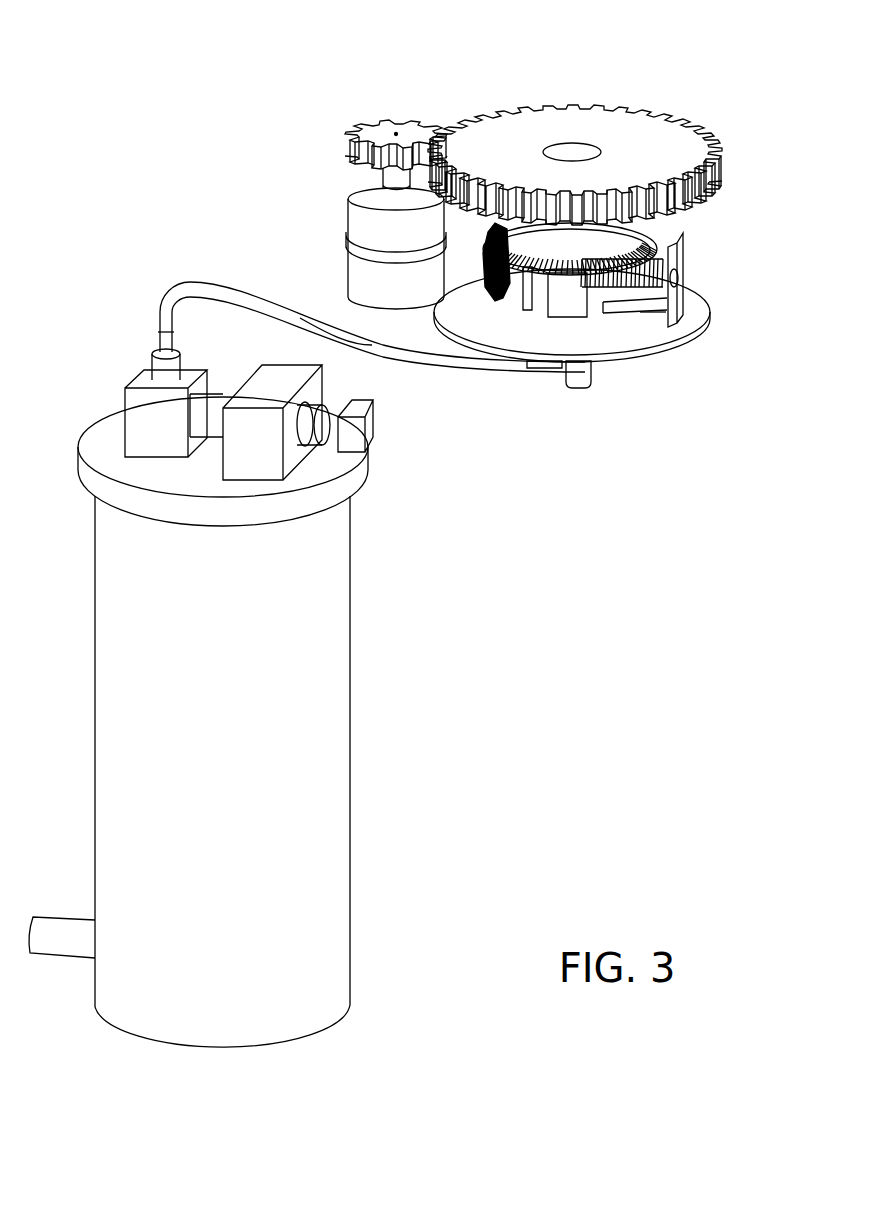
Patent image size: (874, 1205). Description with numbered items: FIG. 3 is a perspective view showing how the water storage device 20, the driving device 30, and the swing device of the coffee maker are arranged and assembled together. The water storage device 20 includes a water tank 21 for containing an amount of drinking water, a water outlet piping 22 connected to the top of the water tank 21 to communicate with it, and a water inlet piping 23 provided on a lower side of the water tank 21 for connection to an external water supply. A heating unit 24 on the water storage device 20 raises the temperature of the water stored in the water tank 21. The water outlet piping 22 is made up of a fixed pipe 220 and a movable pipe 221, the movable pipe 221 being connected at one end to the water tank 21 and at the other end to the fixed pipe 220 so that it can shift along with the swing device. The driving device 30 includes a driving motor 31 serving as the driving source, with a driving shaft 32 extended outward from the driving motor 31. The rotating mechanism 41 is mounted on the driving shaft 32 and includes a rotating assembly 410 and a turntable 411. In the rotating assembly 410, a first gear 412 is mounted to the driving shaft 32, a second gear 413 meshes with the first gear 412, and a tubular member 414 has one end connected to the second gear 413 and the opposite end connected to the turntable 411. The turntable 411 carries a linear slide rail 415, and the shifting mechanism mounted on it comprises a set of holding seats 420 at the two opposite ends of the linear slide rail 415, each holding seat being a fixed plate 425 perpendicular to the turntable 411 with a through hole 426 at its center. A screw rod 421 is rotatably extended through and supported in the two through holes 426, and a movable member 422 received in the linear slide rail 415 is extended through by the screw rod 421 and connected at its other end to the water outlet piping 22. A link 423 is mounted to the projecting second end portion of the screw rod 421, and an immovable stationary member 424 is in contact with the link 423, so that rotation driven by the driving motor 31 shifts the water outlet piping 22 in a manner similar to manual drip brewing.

The water storage device 20 is at (310, 664).
The water tank 21 is at (320, 800).
The water outlet piping 22 is at (374, 383).
The water inlet piping 23 is at (60, 935).
The heating unit 24 is at (230, 386).
The driving device 30 is at (328, 214).
The driving motor 31 is at (370, 281).
The driving shaft 32 is at (392, 183).
The rotating mechanism 41 is at (576, 240).
The fixed pipe 220 is at (547, 372).
The movable pipe 221 is at (372, 338).
The rotating assembly 410 is at (575, 112).
The turntable 411 is at (459, 312).
The first gear 412 is at (385, 128).
The second gear 413 is at (640, 134).
The tubular member 414 is at (568, 152).
The linear slide rail 415 is at (634, 314).
The holding seats 420 is at (631, 330).
The screw rod 421 is at (662, 332).
The movable member 422 is at (605, 310).
The link 423 is at (505, 298).
The stationary member 424 is at (644, 232).
The fixed plate 425 is at (689, 267).
The through hole 426 is at (684, 275).